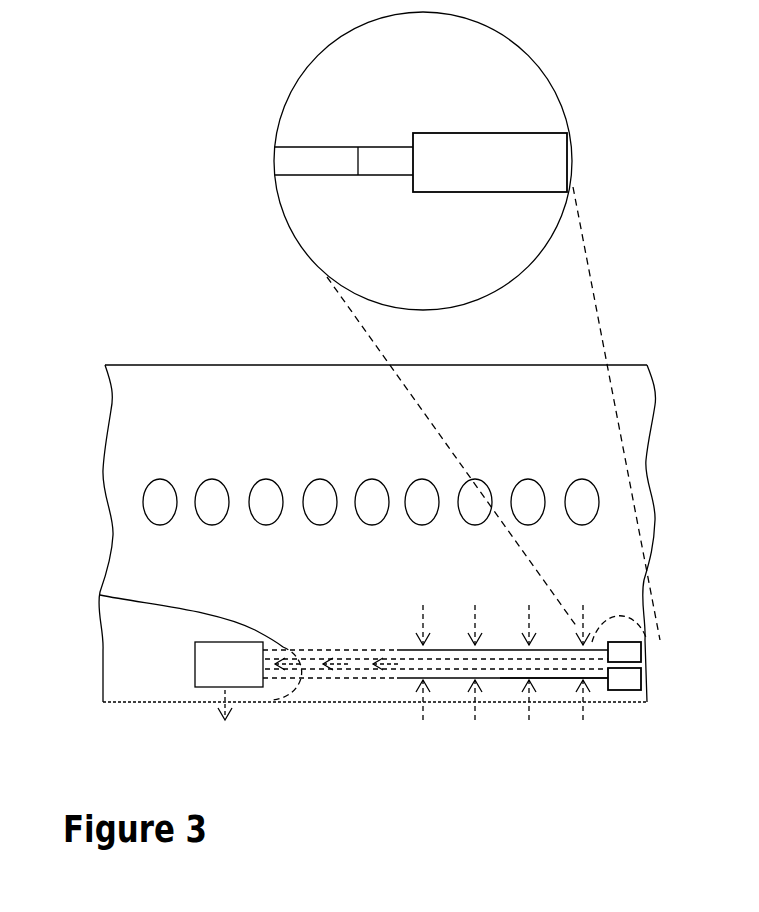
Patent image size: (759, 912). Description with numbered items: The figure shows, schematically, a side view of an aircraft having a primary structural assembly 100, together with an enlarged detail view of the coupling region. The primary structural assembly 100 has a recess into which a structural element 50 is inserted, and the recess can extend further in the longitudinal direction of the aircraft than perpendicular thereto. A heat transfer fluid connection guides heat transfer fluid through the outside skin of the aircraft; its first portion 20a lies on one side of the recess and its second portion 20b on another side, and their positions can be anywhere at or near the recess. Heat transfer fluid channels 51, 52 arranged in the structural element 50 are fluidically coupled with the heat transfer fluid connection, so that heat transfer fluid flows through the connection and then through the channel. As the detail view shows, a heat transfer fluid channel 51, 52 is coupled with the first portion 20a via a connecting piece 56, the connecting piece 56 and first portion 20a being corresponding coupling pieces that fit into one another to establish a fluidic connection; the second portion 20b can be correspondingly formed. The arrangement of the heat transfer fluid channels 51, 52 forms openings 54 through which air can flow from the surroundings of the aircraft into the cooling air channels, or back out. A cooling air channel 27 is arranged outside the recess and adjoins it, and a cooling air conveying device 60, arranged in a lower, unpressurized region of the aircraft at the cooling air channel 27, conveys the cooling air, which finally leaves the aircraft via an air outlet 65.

The primary structural assembly 100 is at (90, 420).
The first portion of the heat transfer fluid connection 20a is at (620, 652).
The second portion of the heat transfer fluid connection 20b is at (637, 688).
The cooling air channel 27 is at (360, 676).
The structural element 50 is at (443, 679).
The heat transfer fluid channel 51 is at (315, 165).
The further heat transfer fluid channel 52 is at (343, 208).
The openings 54 is at (552, 679).
The connecting piece 56 is at (390, 155).
The cooling air conveying device 60 is at (210, 676).
The air outlet 65 is at (245, 713).